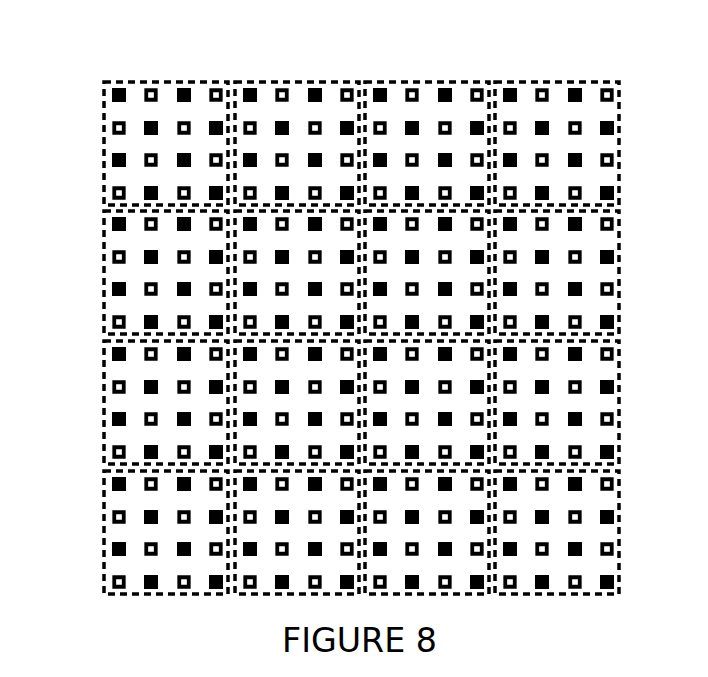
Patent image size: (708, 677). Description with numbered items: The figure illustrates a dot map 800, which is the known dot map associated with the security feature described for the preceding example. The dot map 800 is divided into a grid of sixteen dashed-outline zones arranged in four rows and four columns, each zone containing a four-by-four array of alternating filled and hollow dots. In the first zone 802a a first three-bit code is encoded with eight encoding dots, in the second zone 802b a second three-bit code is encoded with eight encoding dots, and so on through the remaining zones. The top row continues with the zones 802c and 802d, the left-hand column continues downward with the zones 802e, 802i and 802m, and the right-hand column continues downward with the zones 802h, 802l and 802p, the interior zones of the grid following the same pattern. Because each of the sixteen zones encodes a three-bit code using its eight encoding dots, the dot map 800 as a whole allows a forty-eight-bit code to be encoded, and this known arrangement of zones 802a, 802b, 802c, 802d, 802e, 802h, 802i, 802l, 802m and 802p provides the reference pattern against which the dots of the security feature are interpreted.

The dot map 800 is at (82, 137).
The first zone 802a is at (130, 81).
The second zone 802b is at (252, 81).
The zone 802c is at (388, 81).
The zone 802d is at (515, 81).
The zone 802e is at (103, 234).
The zone 802h is at (620, 236).
The zone 802i is at (103, 364).
The zone 802l is at (620, 366).
The zone 802m is at (103, 494).
The zone 802p is at (620, 496).